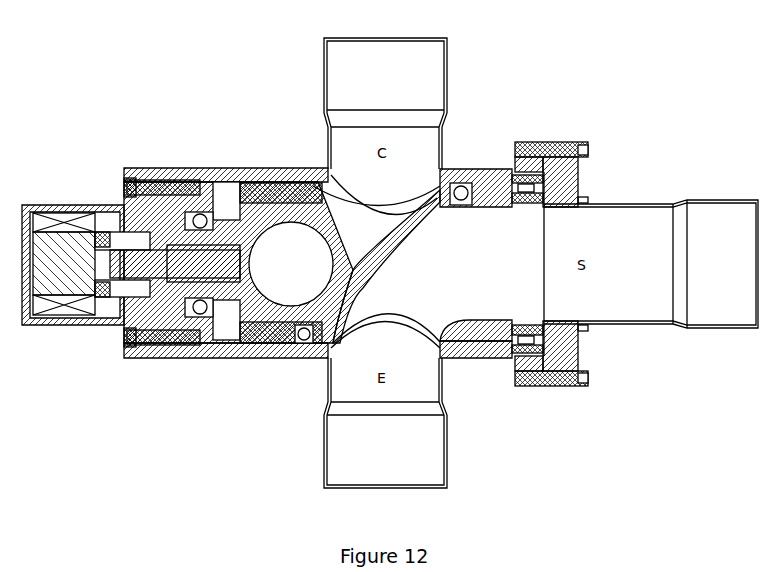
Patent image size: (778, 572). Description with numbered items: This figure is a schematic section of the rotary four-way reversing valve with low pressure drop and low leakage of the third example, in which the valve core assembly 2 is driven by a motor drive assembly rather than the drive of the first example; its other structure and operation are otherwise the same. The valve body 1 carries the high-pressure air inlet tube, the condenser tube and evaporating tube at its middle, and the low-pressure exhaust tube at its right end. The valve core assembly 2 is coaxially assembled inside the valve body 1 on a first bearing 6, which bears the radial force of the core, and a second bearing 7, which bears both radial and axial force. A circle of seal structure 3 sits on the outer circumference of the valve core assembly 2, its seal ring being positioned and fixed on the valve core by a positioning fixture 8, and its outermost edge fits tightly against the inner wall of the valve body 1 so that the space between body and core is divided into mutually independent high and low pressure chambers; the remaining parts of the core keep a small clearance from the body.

The valve body 1 is at (218, 172).
The valve core assembly 2 is at (237, 183).
The positioning fixture 8 is at (265, 200).
The seal structure 3 is at (457, 190).
The second bearing 7 is at (520, 187).
The first bearing 6 is at (200, 307).